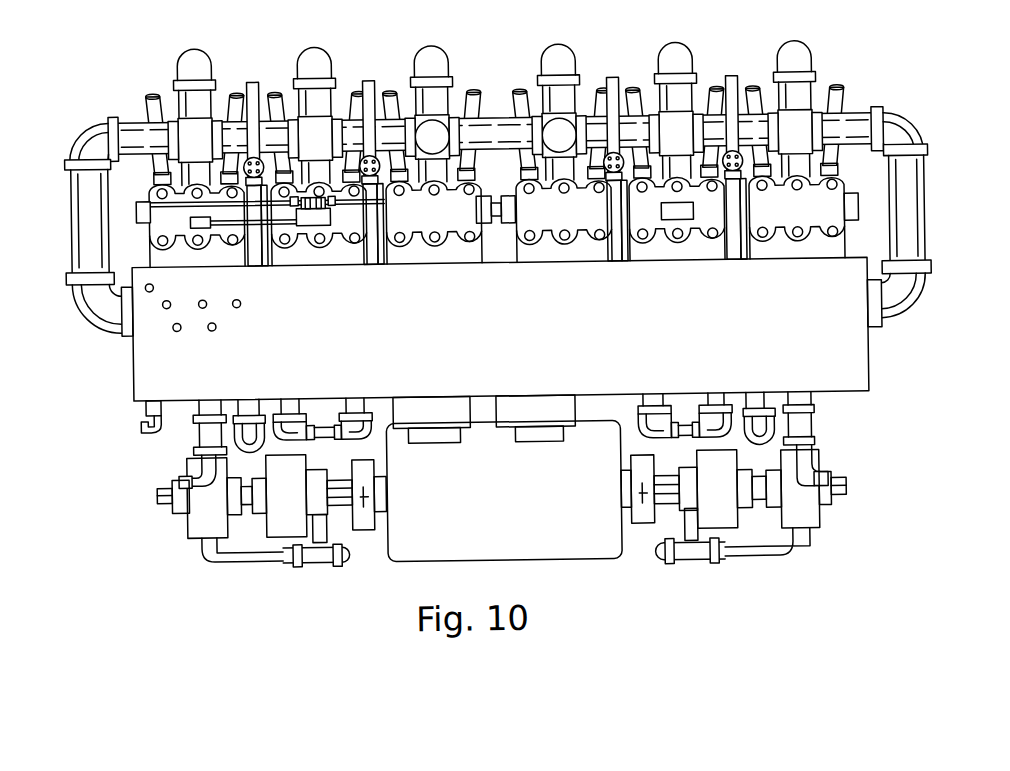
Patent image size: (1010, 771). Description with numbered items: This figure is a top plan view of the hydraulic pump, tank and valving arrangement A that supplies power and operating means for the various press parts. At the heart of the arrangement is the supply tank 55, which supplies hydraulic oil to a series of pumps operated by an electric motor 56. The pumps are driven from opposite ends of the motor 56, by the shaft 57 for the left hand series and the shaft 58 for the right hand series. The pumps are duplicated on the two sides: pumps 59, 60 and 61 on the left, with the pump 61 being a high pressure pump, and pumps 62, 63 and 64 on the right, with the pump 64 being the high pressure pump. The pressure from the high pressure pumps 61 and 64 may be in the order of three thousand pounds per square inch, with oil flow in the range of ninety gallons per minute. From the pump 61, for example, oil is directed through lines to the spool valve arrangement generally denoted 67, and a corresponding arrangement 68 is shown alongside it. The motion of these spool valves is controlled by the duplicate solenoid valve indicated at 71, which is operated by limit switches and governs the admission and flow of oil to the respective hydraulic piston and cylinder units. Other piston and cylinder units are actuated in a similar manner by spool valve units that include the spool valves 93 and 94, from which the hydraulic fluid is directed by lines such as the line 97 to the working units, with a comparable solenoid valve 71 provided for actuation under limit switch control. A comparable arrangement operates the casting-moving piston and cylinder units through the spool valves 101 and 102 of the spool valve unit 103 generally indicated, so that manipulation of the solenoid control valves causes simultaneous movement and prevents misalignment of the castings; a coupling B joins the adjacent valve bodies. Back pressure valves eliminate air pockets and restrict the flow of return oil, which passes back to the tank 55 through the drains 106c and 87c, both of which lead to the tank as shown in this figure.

The pump assembly A is at (875, 373).
The coupling B is at (501, 190).
The supply tank 55 is at (828, 388).
The electric motor 56 is at (544, 551).
The shaft 57 is at (380, 516).
The shaft 58 is at (619, 510).
The pump 59 is at (274, 534).
The pump 60 is at (192, 534).
The high pressure pump 61 is at (175, 510).
The pump 62 is at (705, 523).
The pump 63 is at (784, 522).
The high pressure pump 64 is at (827, 507).
The spool valve arrangement 67 is at (217, 256).
The pump head 68 is at (345, 242).
The solenoid valve 71 is at (182, 223).
The drain 87c is at (72, 239).
The spool valve 93 is at (578, 229).
The spool valve 94 is at (426, 232).
The line 97 is at (473, 252).
The spool valve 101 is at (783, 235).
The spool valve 102 is at (658, 239).
The spool valve unit 103 is at (742, 266).
The drain 106c is at (928, 237).